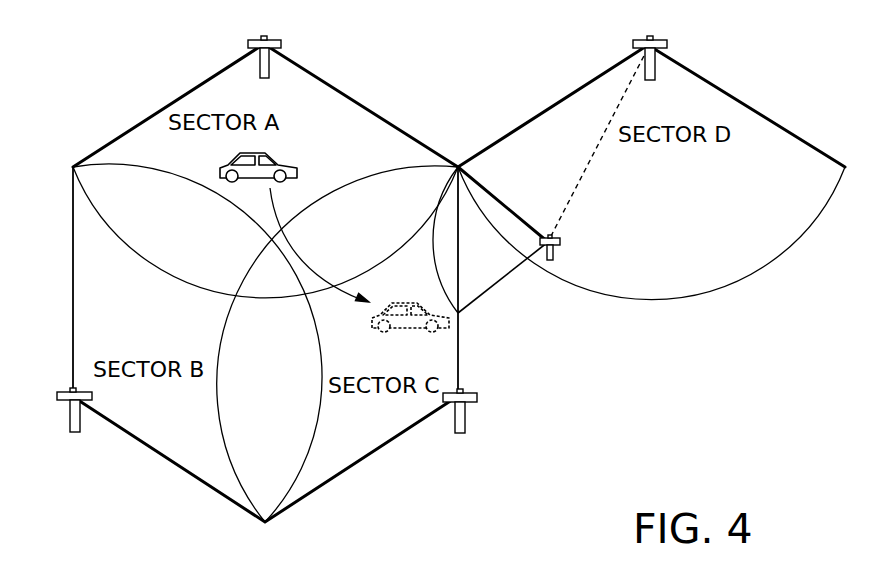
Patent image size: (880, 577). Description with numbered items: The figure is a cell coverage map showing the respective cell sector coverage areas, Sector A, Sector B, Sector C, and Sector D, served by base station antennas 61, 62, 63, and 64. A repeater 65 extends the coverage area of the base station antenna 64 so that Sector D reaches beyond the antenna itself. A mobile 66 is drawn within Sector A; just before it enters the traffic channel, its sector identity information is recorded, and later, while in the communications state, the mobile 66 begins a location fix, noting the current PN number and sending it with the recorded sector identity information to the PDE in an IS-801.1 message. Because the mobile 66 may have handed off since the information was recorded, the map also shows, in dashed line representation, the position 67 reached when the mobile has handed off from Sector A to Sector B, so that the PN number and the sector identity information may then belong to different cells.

The base station antenna 61 is at (260, 63).
The base station antenna 62 is at (68, 416).
The base station antenna 63 is at (466, 417).
The base station antenna 64 is at (642, 62).
The repeater 65 is at (560, 252).
The mobile 66 is at (273, 157).
The position 67 is at (405, 327).